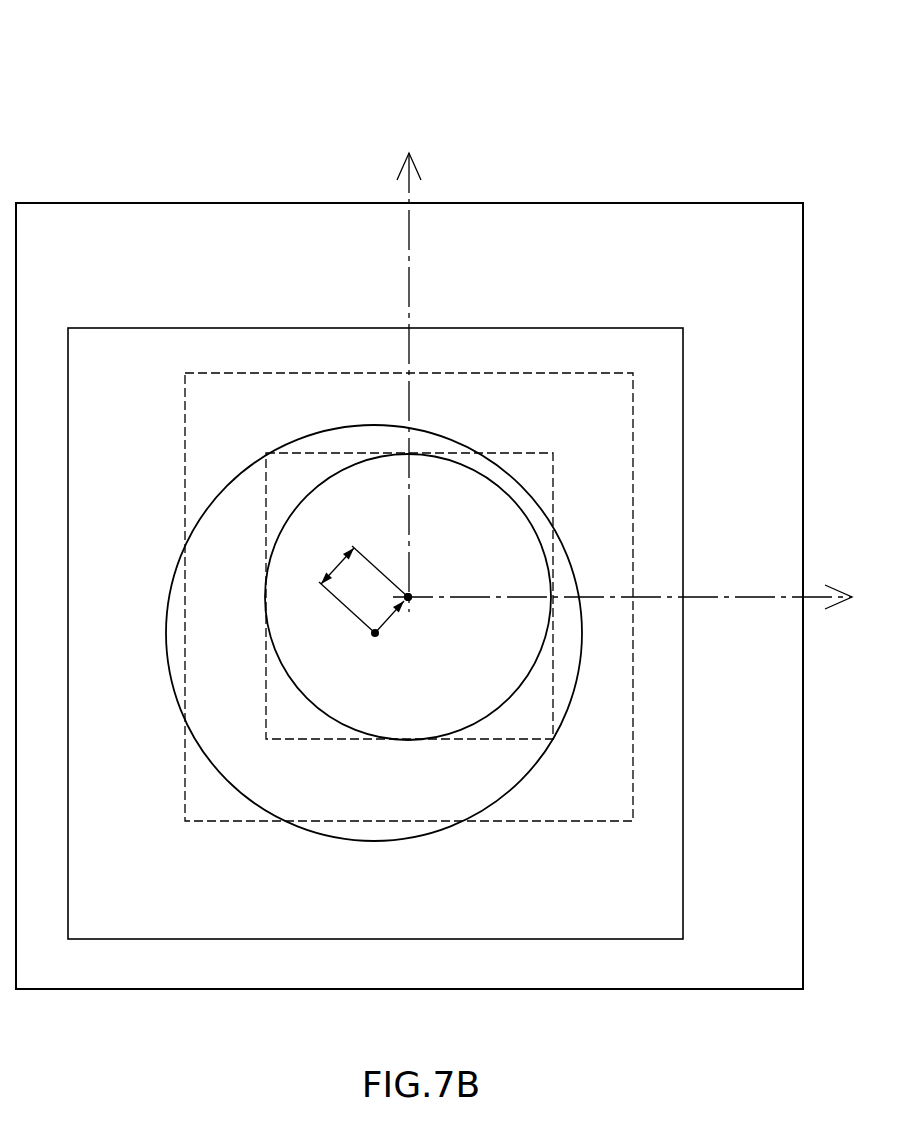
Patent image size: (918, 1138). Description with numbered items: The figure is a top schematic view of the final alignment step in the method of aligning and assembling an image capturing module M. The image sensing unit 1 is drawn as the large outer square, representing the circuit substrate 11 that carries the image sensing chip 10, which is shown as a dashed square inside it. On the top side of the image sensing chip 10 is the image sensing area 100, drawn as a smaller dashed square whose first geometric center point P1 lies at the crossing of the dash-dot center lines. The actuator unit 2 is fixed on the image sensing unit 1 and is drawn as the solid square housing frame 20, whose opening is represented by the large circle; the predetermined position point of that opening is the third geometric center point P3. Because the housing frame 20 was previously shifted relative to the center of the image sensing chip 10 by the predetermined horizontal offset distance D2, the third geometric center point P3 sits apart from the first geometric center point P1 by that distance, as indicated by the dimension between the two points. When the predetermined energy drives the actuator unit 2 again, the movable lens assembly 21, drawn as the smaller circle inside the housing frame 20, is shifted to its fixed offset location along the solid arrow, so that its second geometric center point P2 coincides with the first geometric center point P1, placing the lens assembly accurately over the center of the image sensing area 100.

The image capturing module M is at (50, 43).
The image sensing unit 1 is at (638, 203).
The circuit substrate 11 is at (514, 217).
The actuator unit 2 is at (562, 328).
The image sensing chip 10 is at (506, 373).
The image sensing area 100 is at (523, 467).
The housing frame 20 is at (236, 343).
The movable lens assembly 21 is at (319, 497).
The first geometric center point P1 is at (413, 592).
The second geometric center point P2 is at (413, 592).
The third geometric center point P3 is at (381, 638).
The predetermined horizontal offset distance D2 is at (359, 587).